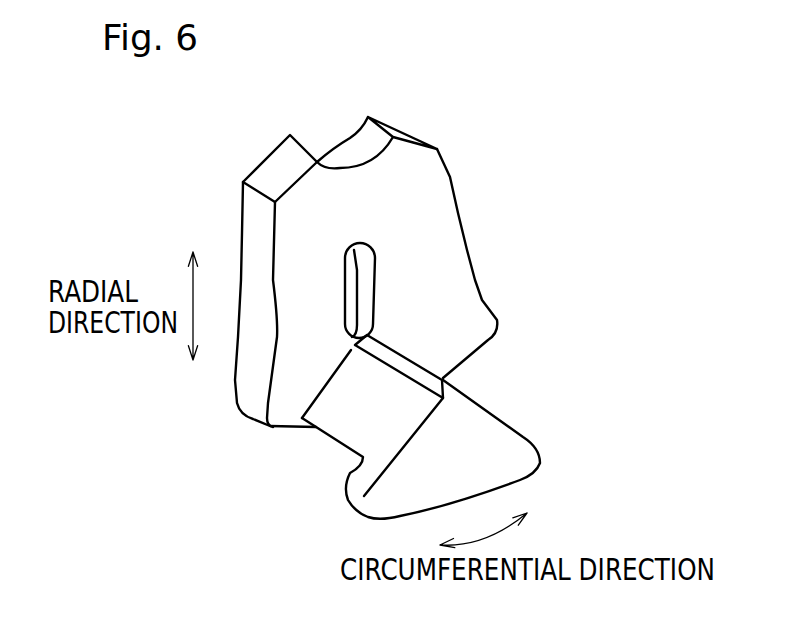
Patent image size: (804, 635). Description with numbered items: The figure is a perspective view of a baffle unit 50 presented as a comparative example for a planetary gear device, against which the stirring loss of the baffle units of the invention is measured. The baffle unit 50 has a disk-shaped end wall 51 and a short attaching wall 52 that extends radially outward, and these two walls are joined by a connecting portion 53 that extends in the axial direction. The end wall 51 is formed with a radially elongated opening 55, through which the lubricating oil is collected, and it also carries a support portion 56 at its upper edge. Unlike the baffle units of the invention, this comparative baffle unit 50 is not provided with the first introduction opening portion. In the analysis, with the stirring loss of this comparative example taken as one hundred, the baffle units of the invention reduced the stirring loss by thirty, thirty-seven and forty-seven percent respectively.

The baffle unit 50 is at (472, 165).
The end wall 51 is at (435, 235).
The attaching wall 52 is at (493, 438).
The connecting portion 53 is at (437, 386).
The opening 55 is at (352, 302).
The support portion 56 is at (355, 145).